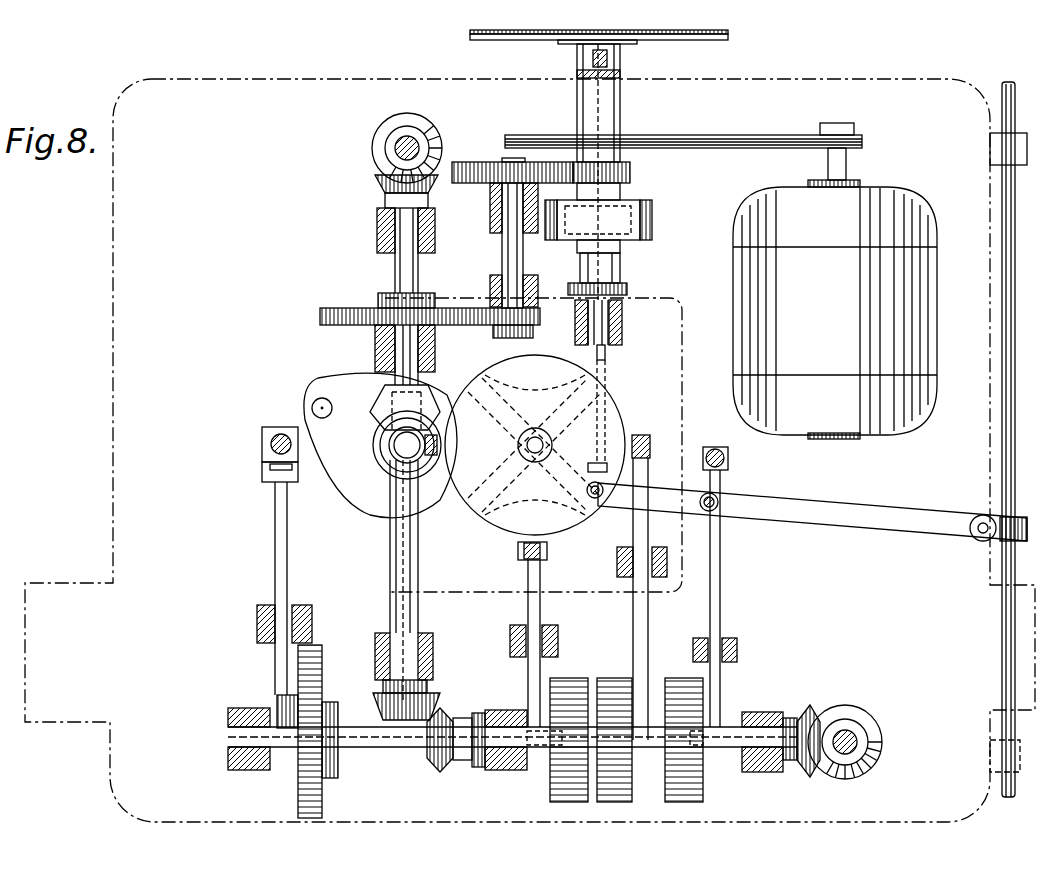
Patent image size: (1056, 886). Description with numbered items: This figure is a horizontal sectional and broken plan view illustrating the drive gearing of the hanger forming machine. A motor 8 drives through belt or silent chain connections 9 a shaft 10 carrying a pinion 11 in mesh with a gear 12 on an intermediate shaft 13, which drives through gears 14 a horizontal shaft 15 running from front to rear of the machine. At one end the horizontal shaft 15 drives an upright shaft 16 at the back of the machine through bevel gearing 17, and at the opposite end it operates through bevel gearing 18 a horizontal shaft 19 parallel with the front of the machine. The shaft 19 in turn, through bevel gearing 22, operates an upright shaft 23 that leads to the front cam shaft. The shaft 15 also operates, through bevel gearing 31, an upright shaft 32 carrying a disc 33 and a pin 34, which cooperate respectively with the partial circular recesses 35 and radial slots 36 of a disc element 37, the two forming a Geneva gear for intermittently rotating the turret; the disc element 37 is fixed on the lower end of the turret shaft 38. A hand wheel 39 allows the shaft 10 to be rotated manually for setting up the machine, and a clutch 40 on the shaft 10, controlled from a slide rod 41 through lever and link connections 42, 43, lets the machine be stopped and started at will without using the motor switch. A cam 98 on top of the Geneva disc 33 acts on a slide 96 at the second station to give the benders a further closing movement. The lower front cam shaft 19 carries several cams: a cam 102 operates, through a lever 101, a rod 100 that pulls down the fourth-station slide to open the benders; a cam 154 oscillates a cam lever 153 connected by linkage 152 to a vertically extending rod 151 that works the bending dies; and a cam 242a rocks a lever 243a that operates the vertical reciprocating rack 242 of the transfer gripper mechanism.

The motor 8 is at (835, 313).
The belt or silent chain connections 9 is at (712, 136).
The shaft 10 is at (577, 107).
The pinion 11 is at (630, 173).
The gear 12 is at (482, 162).
The intermediate shaft 13 is at (502, 255).
The gears 14 is at (540, 316).
The horizontal shaft 15 is at (395, 275).
The upright shaft 16 is at (385, 155).
The bevel gearing 17 is at (378, 178).
The bevel gearing 18 is at (442, 715).
The horizontal shaft 19 is at (372, 748).
The bevel gearing 22 is at (818, 720).
The upright shaft 23 is at (860, 735).
The bevel gearing 31 is at (380, 420).
The upright shaft 32 is at (400, 455).
The disc 33 is at (378, 508).
The pin 34 is at (322, 398).
The partial circular recesses 35 is at (518, 548).
The radial slots 36 is at (482, 510).
The disc element 37 is at (625, 413).
The turret shaft 38 is at (535, 428).
The hand wheel 39 is at (712, 44).
The clutch 40 is at (650, 240).
The slide rod 41 is at (1015, 410).
The lever connection 42 is at (778, 507).
The link connection 43 is at (607, 366).
The slide 96 is at (438, 447).
The cam 98 is at (407, 452).
The rod 100 is at (652, 435).
The lever 101 is at (633, 528).
The cam 102 is at (615, 678).
The vertically extending rod 151 is at (265, 445).
The linkage 152 is at (272, 468).
The cam lever 153 is at (275, 578).
The cam 154 is at (322, 672).
The vertical reciprocating rack 242 is at (716, 448).
The cam 242a is at (704, 796).
The lever 243a is at (722, 585).